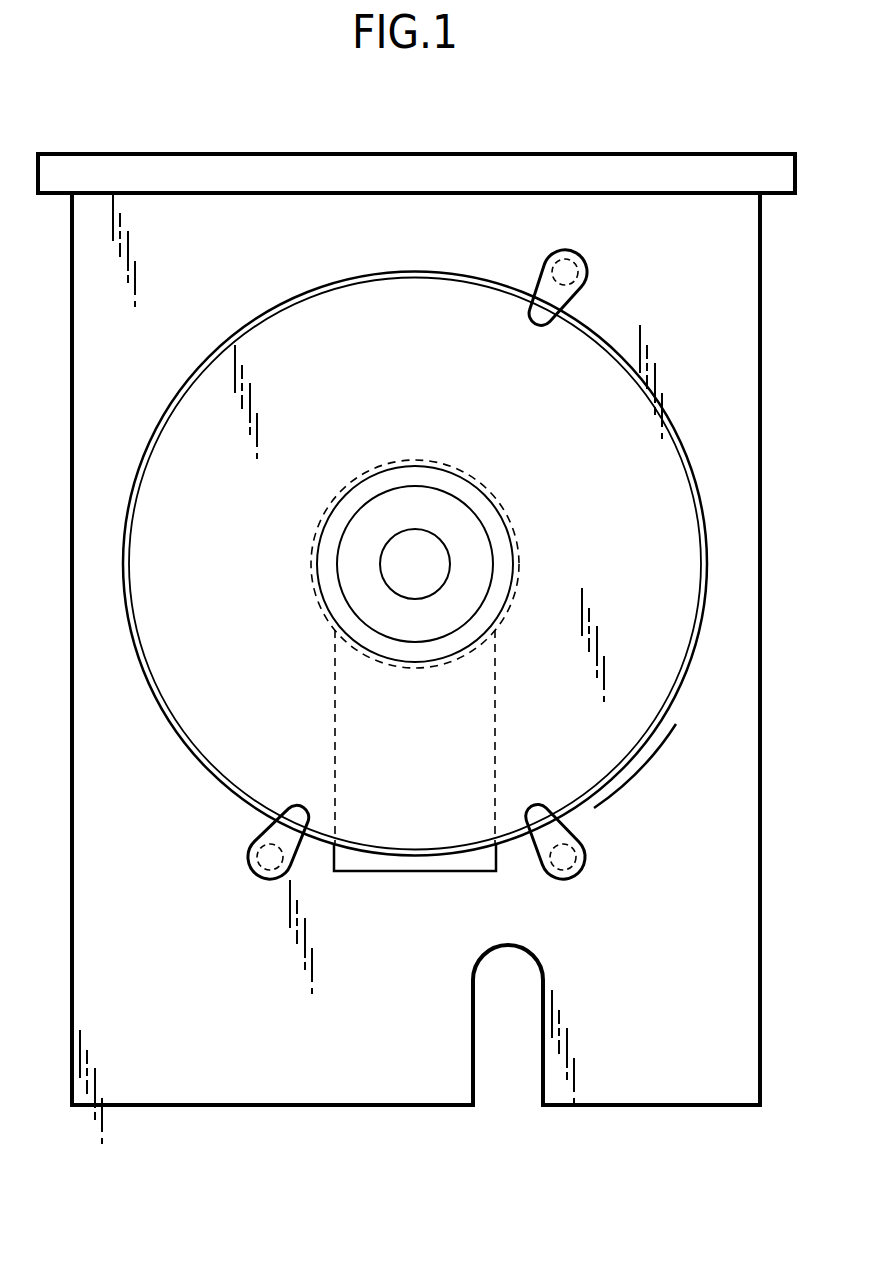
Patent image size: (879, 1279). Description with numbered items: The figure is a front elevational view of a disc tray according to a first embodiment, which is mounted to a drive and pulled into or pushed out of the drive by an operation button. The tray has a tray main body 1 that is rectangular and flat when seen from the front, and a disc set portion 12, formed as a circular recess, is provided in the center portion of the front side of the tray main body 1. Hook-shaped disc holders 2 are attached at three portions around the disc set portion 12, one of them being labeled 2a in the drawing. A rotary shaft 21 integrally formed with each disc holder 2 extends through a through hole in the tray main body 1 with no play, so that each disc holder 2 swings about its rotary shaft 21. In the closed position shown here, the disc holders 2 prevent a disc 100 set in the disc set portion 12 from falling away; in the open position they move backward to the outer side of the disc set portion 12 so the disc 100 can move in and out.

The tray main body 1 is at (762, 320).
The disc 100 is at (676, 432).
The disc set portion 12 is at (632, 740).
The disc holder 2 is at (423, 565).
The holding member 2a is at (543, 262).
The rotary shaft 21 is at (590, 258).